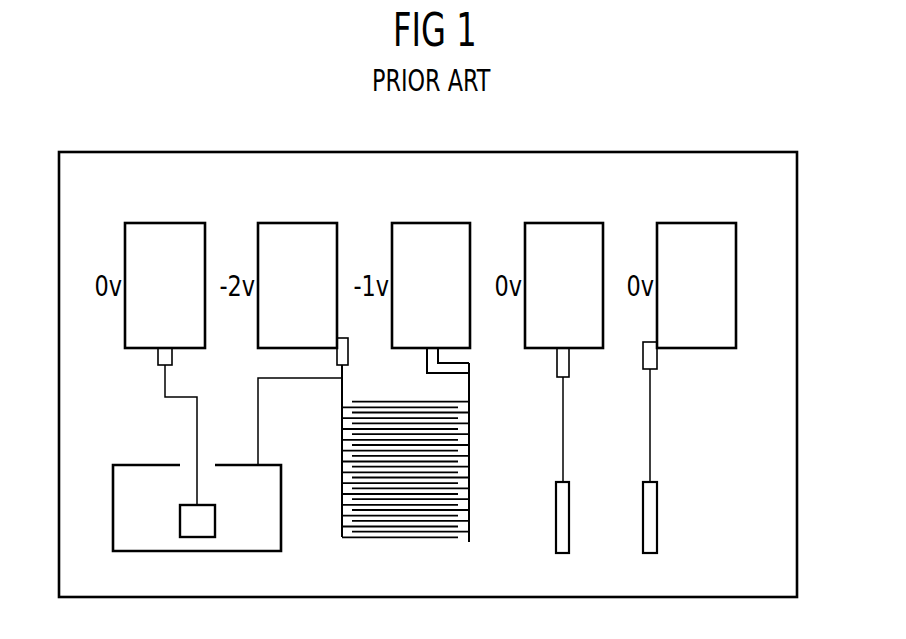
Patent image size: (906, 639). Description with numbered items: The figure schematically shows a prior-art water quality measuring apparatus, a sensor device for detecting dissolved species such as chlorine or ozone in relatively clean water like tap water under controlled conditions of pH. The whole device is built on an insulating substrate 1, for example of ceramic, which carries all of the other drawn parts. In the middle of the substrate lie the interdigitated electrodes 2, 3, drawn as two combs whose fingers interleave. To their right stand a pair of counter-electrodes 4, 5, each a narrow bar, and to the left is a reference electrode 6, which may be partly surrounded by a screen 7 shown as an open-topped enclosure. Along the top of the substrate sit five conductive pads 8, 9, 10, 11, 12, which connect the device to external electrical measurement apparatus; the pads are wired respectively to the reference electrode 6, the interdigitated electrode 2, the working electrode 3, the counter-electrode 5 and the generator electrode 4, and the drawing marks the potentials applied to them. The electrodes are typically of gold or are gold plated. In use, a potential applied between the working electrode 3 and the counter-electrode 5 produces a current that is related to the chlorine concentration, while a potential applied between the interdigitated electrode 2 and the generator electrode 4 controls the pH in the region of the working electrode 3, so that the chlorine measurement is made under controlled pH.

The insulating substrate 1 is at (68, 560).
The interdigitated electrode 2 is at (343, 520).
The working electrode 3 is at (444, 543).
The generator electrode 4 is at (669, 517).
The counter-electrode 5 is at (556, 519).
The reference electrode 6 is at (180, 522).
The screen 7 is at (281, 487).
The conductive pad 8 is at (165, 223).
The conductive pad 9 is at (296, 223).
The conductive pad 10 is at (430, 223).
The conductive pad 11 is at (560, 223).
The conductive pad 12 is at (690, 223).